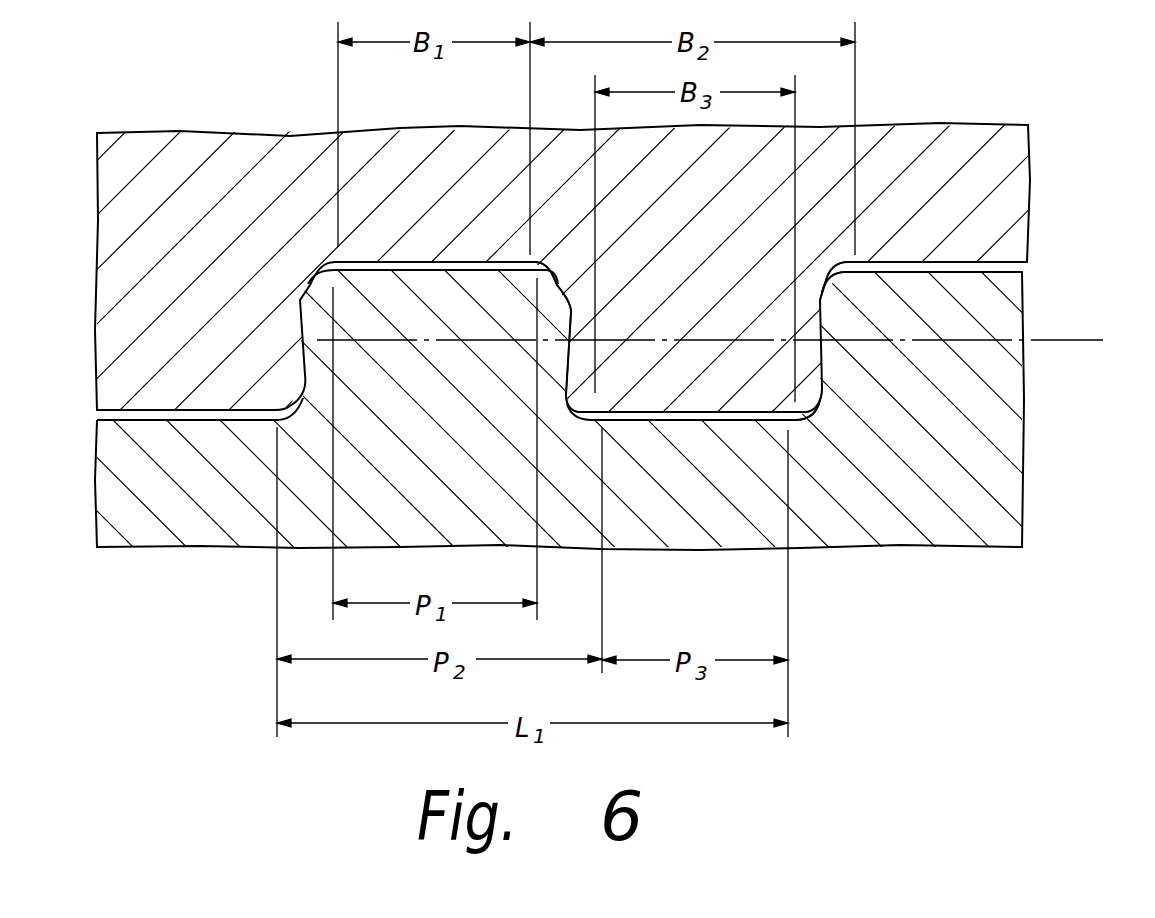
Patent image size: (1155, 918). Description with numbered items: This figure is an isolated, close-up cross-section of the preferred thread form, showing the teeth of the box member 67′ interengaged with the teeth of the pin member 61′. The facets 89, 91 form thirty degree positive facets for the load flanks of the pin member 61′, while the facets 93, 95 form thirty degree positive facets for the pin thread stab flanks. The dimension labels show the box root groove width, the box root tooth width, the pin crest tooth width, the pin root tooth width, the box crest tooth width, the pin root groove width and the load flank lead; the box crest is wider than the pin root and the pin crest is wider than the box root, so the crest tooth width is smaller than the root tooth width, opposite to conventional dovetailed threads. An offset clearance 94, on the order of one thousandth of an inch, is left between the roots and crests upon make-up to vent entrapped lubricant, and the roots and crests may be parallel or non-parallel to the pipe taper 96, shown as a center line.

The box member 67′ is at (1012, 153).
The pin member 61′ is at (1005, 382).
The facet 89 is at (830, 288).
The facet 91 is at (823, 390).
The facet 93 is at (556, 287).
The offset clearance 94 is at (378, 262).
The facet 95 is at (567, 400).
The pipe taper 96 is at (1073, 340).